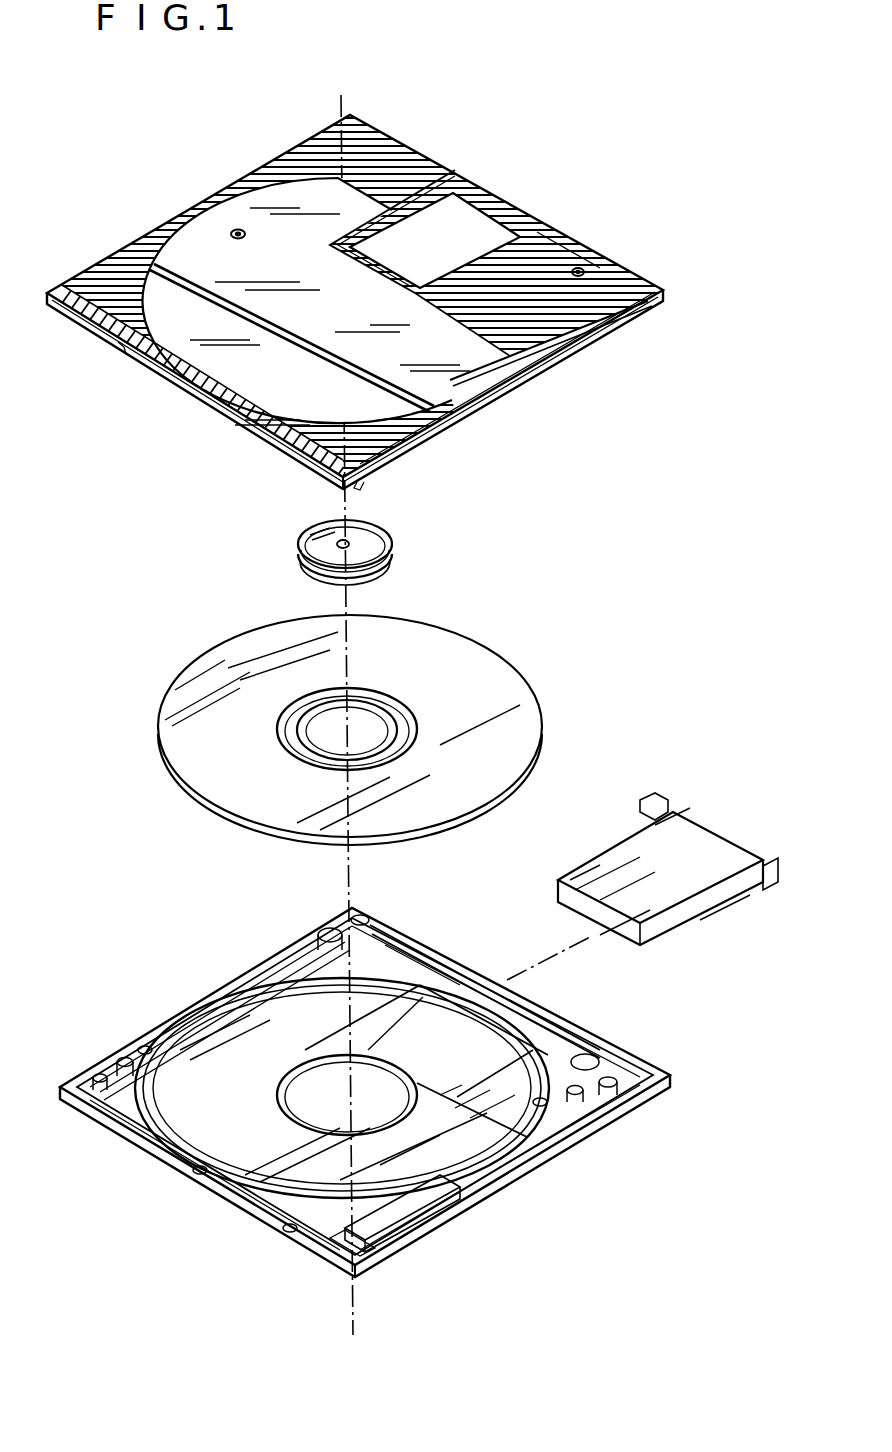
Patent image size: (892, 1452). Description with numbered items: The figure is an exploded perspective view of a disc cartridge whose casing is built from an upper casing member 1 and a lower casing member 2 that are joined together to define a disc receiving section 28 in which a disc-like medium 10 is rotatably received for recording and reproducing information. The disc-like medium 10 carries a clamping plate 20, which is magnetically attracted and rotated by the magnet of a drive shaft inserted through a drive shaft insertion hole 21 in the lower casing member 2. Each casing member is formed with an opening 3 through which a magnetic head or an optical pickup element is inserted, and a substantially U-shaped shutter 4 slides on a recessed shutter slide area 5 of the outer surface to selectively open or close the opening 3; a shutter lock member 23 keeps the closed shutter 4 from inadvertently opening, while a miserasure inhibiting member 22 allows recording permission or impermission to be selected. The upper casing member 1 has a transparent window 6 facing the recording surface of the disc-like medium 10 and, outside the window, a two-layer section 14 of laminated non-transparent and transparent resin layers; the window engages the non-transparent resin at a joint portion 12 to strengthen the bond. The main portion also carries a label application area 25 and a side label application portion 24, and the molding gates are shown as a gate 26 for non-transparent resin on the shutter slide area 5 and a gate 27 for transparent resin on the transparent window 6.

The upper casing member 1 is at (398, 152).
The lower casing member 2 is at (530, 1172).
The opening 3 is at (462, 228).
The shutter 4 is at (713, 840).
The shutter slide area 5 is at (548, 243).
The transparent window 6 is at (453, 377).
The disc-like medium 10 is at (470, 655).
The joint portion 12 is at (165, 240).
The two-layer section 14 is at (273, 172).
The clamping plate 20 is at (380, 545).
The drive shaft insertion hole 21 is at (313, 1092).
The miserasure inhibiting member 22 is at (380, 1255).
The shutter lock member 23 is at (395, 925).
The label application portion 24 is at (400, 455).
The label application area 25 is at (128, 350).
The gate for non-transparent resin 26 is at (585, 268).
The gate for transparent resin 27 is at (235, 230).
The disc receiving section 28 is at (250, 1035).